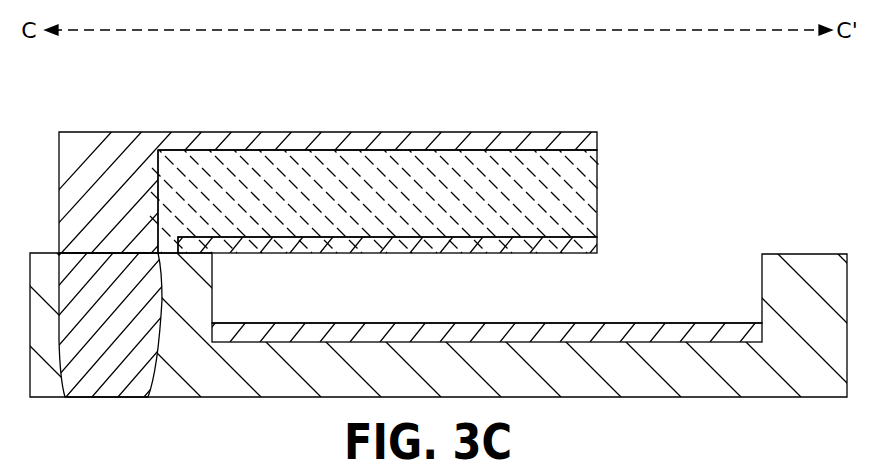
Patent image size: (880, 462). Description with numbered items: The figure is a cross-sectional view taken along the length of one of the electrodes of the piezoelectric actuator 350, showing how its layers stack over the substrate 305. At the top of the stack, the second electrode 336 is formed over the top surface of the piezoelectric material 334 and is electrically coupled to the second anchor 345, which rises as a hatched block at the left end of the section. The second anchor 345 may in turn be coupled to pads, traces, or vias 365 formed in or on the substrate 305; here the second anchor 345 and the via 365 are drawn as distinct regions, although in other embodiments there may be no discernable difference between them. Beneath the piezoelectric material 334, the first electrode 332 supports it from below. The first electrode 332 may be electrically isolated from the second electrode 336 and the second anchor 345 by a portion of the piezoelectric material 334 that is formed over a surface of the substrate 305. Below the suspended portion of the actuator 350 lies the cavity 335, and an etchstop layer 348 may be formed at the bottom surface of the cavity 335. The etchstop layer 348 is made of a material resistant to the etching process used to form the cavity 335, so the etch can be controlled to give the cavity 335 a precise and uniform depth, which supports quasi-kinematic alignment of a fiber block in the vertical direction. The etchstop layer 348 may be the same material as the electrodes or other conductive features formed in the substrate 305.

The substrate 305 is at (772, 383).
The first electrode 332 is at (492, 242).
The piezoelectric material 334 is at (355, 204).
The cavity 335 is at (654, 235).
The second electrode 336 is at (433, 142).
The second anchor 345 is at (89, 209).
The etchstop layer 348 is at (662, 330).
The actuator 350 is at (609, 86).
The via 365 is at (89, 345).